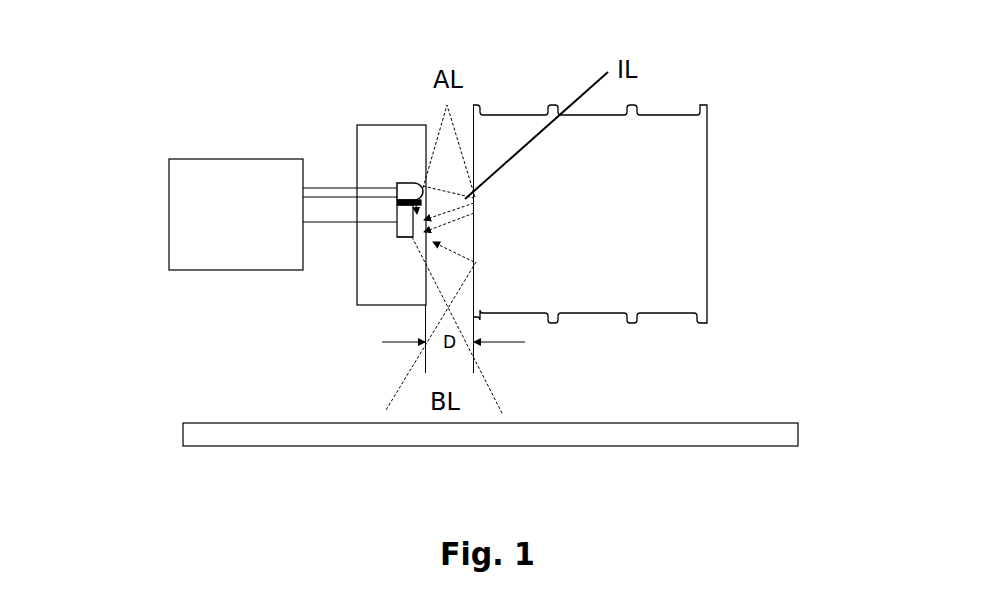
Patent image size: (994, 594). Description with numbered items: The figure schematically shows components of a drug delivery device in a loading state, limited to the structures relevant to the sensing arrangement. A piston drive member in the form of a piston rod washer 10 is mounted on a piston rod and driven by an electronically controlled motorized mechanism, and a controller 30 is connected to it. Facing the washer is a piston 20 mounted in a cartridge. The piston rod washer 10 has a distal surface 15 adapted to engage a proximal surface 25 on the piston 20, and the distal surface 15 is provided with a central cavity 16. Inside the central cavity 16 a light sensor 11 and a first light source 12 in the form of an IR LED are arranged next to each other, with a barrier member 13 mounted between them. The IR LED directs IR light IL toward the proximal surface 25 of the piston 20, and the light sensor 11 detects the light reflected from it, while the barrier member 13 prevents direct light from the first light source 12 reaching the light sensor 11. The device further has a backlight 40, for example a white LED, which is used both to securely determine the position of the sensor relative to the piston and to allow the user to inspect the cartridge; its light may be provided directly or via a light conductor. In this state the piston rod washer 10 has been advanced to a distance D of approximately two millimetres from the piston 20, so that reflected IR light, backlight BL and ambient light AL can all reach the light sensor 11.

The piston rod washer 10 is at (373, 170).
The light sensor 11 is at (407, 225).
The first light source 12 is at (405, 190).
The barrier member 13 is at (420, 203).
The distal surface 15 is at (425, 148).
The central cavity 16 is at (410, 231).
The piston 20 is at (692, 216).
The proximal surface 25 is at (473, 224).
The controller 30 is at (203, 205).
The backlight 40 is at (204, 433).